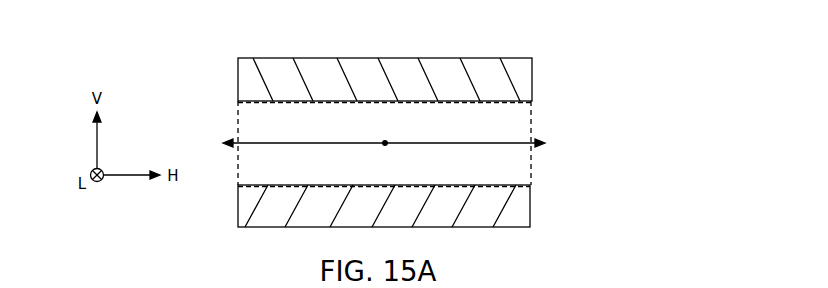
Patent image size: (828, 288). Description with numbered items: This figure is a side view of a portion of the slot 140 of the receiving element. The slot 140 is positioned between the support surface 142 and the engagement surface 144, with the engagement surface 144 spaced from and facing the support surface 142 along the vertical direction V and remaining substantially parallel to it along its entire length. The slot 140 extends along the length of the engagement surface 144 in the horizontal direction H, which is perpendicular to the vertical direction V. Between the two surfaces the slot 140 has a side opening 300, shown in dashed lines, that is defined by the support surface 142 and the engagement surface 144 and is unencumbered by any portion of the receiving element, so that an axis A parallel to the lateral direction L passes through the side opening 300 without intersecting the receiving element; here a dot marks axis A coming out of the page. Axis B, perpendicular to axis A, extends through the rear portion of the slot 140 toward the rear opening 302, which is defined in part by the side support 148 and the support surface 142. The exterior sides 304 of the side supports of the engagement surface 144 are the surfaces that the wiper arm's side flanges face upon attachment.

The engagement surface 144 is at (532, 73).
The side support 148 is at (527, 90).
The rear opening 302 is at (530, 118).
The exterior sides 304 is at (242, 85).
The side opening 300 is at (502, 155).
The support surface 142 is at (530, 208).
The slot 140 is at (248, 167).